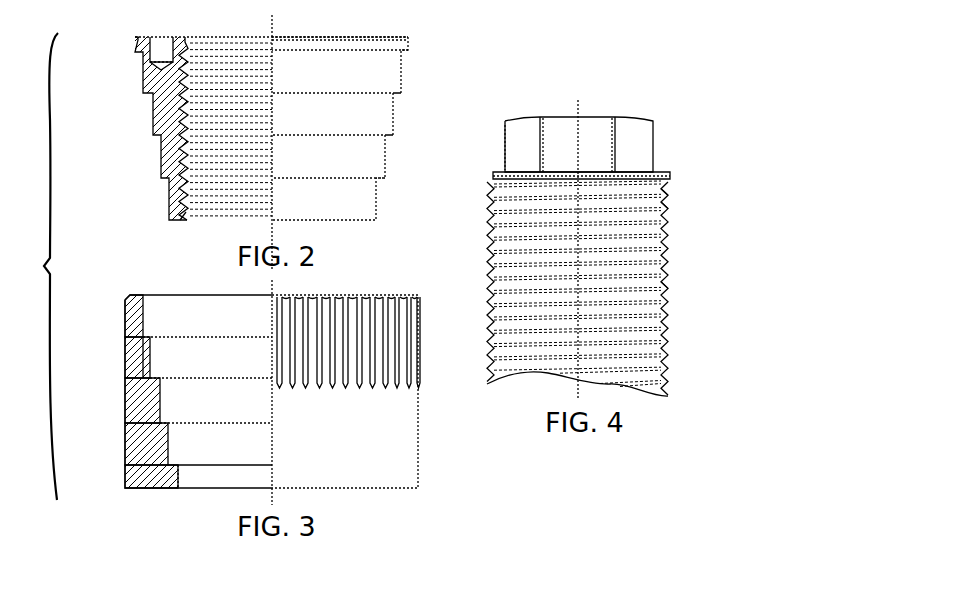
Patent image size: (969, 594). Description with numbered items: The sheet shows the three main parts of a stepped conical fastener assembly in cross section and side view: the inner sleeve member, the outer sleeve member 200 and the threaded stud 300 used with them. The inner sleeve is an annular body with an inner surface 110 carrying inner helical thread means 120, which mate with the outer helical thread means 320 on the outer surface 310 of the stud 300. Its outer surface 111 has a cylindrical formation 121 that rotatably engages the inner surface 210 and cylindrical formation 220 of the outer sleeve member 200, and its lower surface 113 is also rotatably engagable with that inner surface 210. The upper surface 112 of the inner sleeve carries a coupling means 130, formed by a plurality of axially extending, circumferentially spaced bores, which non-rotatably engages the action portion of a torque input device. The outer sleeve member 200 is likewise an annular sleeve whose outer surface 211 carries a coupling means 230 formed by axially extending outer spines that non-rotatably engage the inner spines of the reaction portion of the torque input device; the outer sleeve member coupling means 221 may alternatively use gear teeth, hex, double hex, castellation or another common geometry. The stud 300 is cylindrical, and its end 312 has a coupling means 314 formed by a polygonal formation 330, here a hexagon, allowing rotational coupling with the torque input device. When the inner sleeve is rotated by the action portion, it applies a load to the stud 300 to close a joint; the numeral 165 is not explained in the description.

In FIG. 2, the inner surface 110 is at (190, 215).
In FIG. 2, the outer surface 111 is at (390, 70).
In FIG. 2, the upper surface 112 is at (388, 37).
In FIG. 2, the lower surface 113 is at (365, 222).
In FIG. 2, the inner helical thread means 120 is at (178, 220).
In FIG. 2, the cylindrical formation 121 is at (392, 112).
In FIG. 2, the coupling means 130 is at (168, 48).
In FIG. 3, the outer sleeve member 200 is at (372, 503).
In FIG. 3, the inner surface 210 is at (175, 480).
In FIG. 3, the outer surface 211 is at (125, 430).
In FIG. 3, the cylindrical formation 220 is at (168, 447).
In FIG. 3, the outer sleeve member coupling means 221 is at (125, 358).
In FIG. 3, the coupling means 230 is at (127, 305).
In FIG. 4, the threaded stud 300 is at (652, 97).
In FIG. 4, the outer surface 310 is at (670, 263).
In FIG. 4, the end 312 is at (685, 199).
In FIG. 4, the coupling means 314 is at (522, 150).
In FIG. 4, the outer helical thread means 320 is at (668, 283).
In FIG. 4, the polygonal formation 330 is at (655, 128).
In FIG. 4, the thread start 165 is at (653, 193).